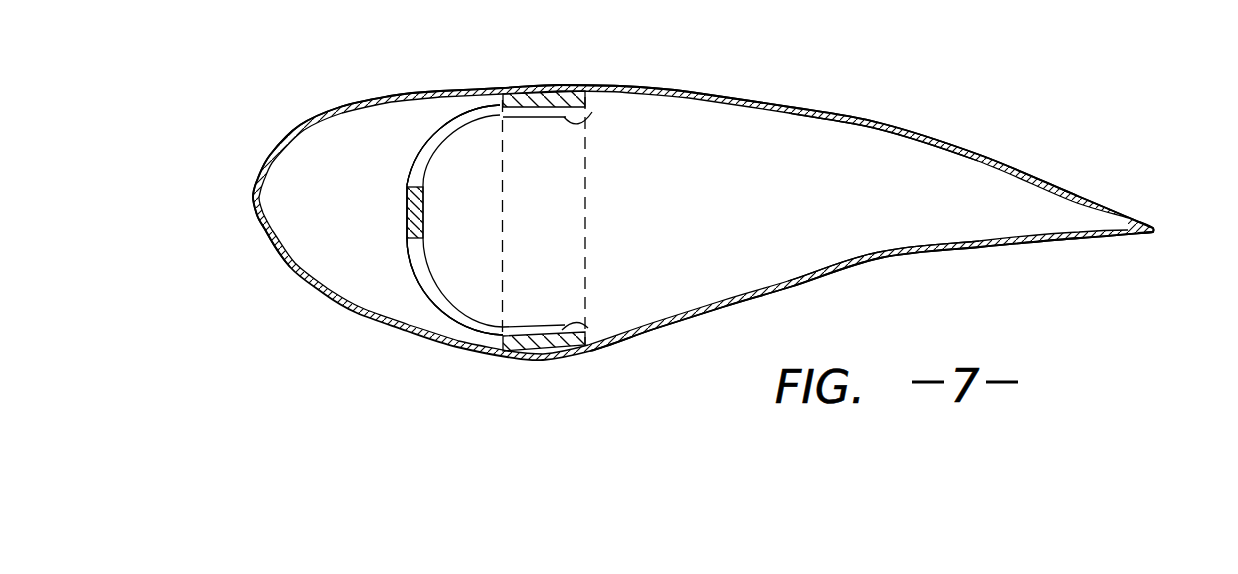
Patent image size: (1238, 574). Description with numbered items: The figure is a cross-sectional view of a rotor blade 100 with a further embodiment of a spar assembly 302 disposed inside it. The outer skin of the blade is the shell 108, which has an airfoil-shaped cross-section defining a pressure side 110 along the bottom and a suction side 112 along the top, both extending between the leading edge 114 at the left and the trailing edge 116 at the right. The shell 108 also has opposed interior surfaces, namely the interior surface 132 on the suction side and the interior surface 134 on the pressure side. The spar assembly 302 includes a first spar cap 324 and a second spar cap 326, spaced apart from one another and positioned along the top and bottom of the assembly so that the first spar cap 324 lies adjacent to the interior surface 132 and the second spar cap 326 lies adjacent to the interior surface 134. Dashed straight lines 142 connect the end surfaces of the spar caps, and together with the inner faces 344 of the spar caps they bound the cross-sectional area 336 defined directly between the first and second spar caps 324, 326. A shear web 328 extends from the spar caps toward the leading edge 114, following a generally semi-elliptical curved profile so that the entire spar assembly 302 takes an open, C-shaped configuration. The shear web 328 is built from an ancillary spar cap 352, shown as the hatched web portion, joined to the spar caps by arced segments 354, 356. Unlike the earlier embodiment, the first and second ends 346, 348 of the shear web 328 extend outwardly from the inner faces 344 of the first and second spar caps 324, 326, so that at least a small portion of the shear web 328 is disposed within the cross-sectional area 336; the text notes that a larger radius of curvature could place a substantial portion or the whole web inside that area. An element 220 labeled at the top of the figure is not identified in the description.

The rotor blade 100 is at (961, 69).
The shell 108 is at (935, 141).
The pressure side 110 is at (937, 260).
The suction side 112 is at (829, 110).
The leading edge 114 is at (256, 209).
The trailing edge 116 is at (1158, 233).
The interior surface of the shell on the suction side 132 is at (902, 136).
The interior surface of the shell on the pressure side 134 is at (915, 255).
The straight lines 142 is at (500, 223).
The shear web 220 is at (376, 5).
The spar assembly 302 is at (654, 191).
The first spar cap 324 is at (543, 86).
The second spar cap 326 is at (533, 354).
The shear web 328 is at (397, 267).
The cross-sectional area 336 is at (562, 232).
The inner faces 344 is at (592, 112).
The first end of the shear web 346 is at (543, 108).
The second end of the shear web 348 is at (521, 328).
The ancillary spar cap 352 is at (407, 208).
The arced segment 354 is at (435, 148).
The arced segment 356 is at (457, 313).